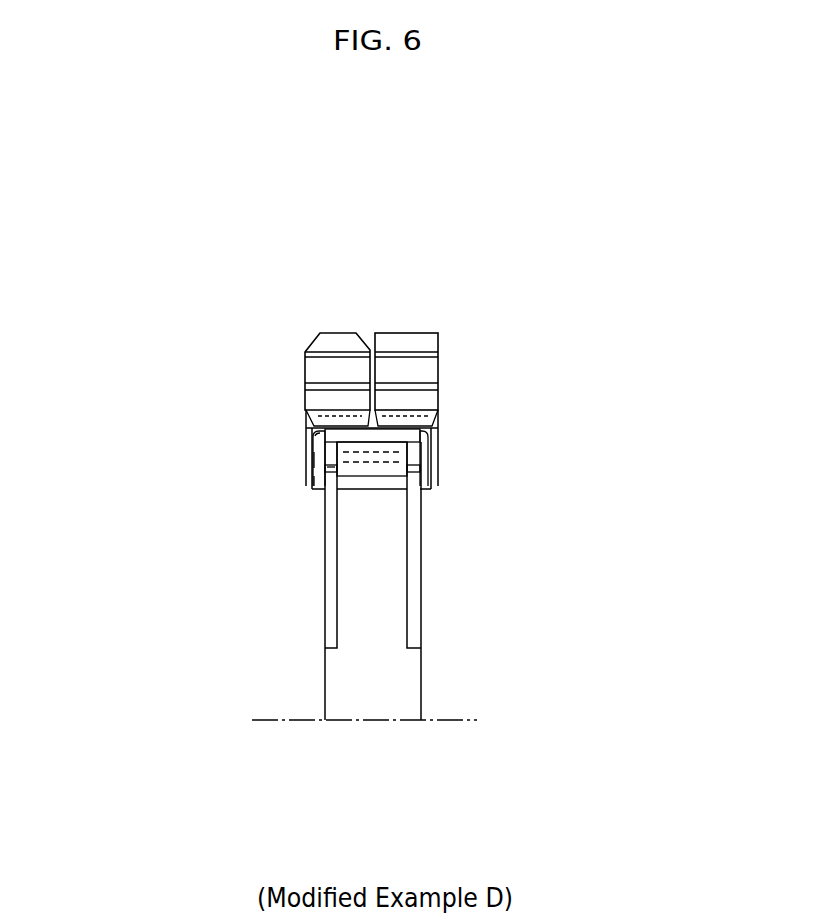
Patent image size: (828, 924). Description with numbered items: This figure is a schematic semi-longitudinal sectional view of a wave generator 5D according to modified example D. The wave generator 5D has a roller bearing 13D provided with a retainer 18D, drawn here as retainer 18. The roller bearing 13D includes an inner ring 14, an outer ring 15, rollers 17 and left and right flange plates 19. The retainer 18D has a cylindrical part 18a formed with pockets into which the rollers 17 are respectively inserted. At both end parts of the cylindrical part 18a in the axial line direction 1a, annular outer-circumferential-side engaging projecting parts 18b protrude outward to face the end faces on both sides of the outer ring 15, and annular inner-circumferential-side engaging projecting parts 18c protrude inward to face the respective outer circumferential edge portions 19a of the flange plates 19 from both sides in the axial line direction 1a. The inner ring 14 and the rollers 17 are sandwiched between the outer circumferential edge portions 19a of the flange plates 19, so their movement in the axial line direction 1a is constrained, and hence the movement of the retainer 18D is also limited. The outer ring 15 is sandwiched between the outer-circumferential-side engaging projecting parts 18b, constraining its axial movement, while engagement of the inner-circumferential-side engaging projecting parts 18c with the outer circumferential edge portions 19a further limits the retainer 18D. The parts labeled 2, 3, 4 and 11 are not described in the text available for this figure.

The second terminal block 2 is at (445, 341).
The first terminal block 3 is at (302, 343).
The housing 4 is at (300, 431).
The wave generator 5D is at (302, 598).
The base body 11 is at (383, 632).
The roller bearing 13D is at (459, 467).
The inner ring 14 is at (434, 485).
The outer ring 15 is at (416, 420).
The rollers 17 is at (428, 462).
The retainer 18 is at (191, 443).
The cylindrical part 18a is at (320, 468).
The outer-circumferential-side engaging projecting parts 18b is at (317, 440).
The inner-circumferential-side engaging projecting parts 18c is at (320, 488).
The retainer 18D is at (428, 446).
The flange plates 19 is at (330, 581).
The outer circumferential edge portions 19a is at (332, 474).
The axial line direction 1a is at (457, 722).